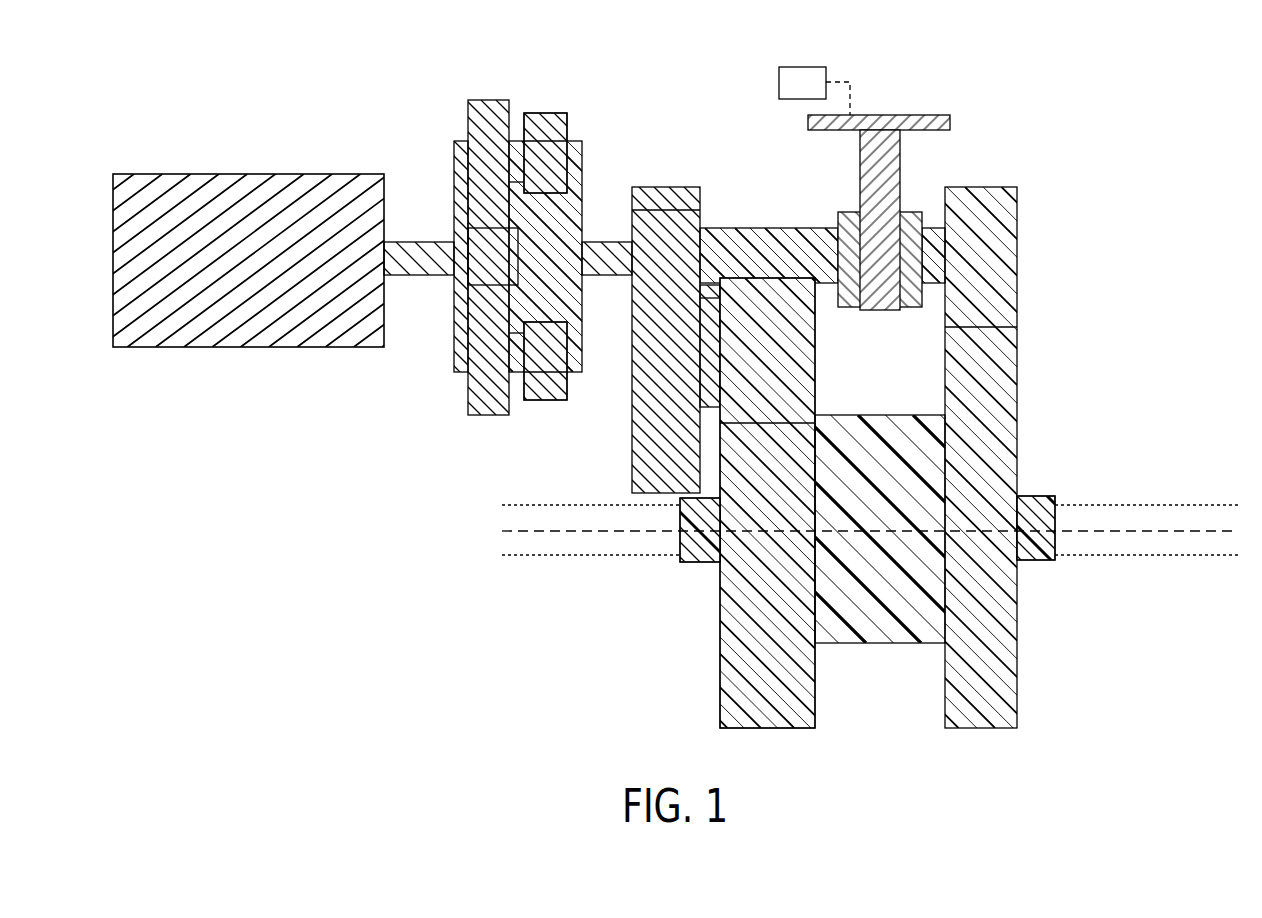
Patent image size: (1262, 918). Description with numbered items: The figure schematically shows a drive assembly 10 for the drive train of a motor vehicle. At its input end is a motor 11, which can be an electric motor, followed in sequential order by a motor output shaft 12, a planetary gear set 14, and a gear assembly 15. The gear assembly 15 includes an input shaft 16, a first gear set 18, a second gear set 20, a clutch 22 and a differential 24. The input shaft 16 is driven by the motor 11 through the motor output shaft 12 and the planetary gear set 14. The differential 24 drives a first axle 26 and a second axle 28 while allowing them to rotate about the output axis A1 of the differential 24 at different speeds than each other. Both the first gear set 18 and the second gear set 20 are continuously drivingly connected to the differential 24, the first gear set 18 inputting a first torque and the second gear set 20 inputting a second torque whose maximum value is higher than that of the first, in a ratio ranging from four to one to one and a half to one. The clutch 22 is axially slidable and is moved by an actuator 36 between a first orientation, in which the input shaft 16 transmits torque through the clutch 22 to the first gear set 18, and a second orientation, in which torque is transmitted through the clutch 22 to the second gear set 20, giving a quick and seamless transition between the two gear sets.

The drive assembly 10 is at (631, 375).
The motor 11 is at (280, 138).
The motor output shaft 12 is at (420, 222).
The planetary gear set 14 is at (546, 95).
The gear assembly 15 is at (678, 155).
The input shaft 16 is at (613, 244).
The first gear set 18 is at (980, 240).
The second gear set 20 is at (765, 218).
The clutch 22 is at (878, 200).
The differential 24 is at (885, 655).
The first axle 26 is at (565, 572).
The second axle 28 is at (1170, 570).
The actuator 36 is at (789, 88).
The output axis A1 is at (1157, 528).